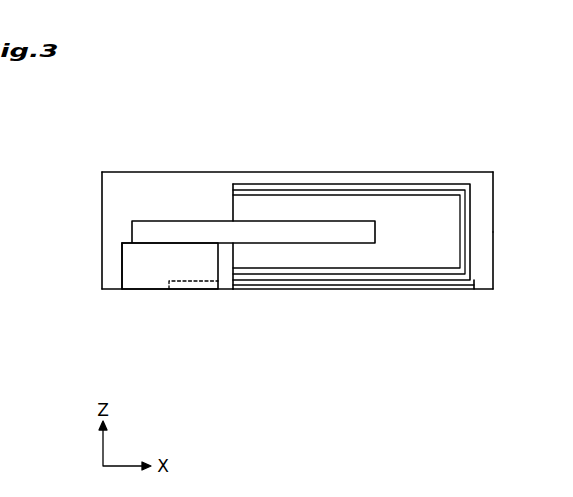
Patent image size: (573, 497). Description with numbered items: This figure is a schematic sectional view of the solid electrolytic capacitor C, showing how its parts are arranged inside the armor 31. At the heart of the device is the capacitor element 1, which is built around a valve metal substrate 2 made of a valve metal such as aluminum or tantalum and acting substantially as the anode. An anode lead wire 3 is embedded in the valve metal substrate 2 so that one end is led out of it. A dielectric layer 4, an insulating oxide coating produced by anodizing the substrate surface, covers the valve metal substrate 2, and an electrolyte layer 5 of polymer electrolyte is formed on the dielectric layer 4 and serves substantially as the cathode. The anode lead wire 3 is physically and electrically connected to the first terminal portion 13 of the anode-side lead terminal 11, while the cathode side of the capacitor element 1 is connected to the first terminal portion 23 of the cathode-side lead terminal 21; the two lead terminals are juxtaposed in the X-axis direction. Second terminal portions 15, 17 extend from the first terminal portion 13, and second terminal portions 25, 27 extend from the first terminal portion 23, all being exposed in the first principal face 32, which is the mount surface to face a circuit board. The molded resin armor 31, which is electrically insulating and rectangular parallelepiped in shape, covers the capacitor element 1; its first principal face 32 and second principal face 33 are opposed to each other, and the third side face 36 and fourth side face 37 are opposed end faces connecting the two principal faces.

The capacitor element 1 is at (296, 188).
The valve metal substrate 2 is at (396, 210).
The anode lead wire 3 is at (392, 125).
The dielectric layer 4 is at (318, 190).
The electrolyte layer 5 is at (350, 184).
The anode-side lead terminal 11 is at (122, 270).
The first terminal portion 13 is at (166, 271).
The second terminal portion 15 is at (198, 317).
The second terminal portion 17 is at (197, 289).
The cathode-side lead terminal 21 is at (477, 287).
The first terminal portion 23 is at (370, 289).
The second terminal portion 25 is at (353, 311).
The second terminal portion 27 is at (300, 285).
The armor 31 is at (482, 203).
The first principal face 32 is at (228, 289).
The second principal face 33 is at (194, 172).
The third side face 36 is at (102, 223).
The fourth side face 37 is at (493, 242).
The solid electrolytic capacitor C is at (478, 124).